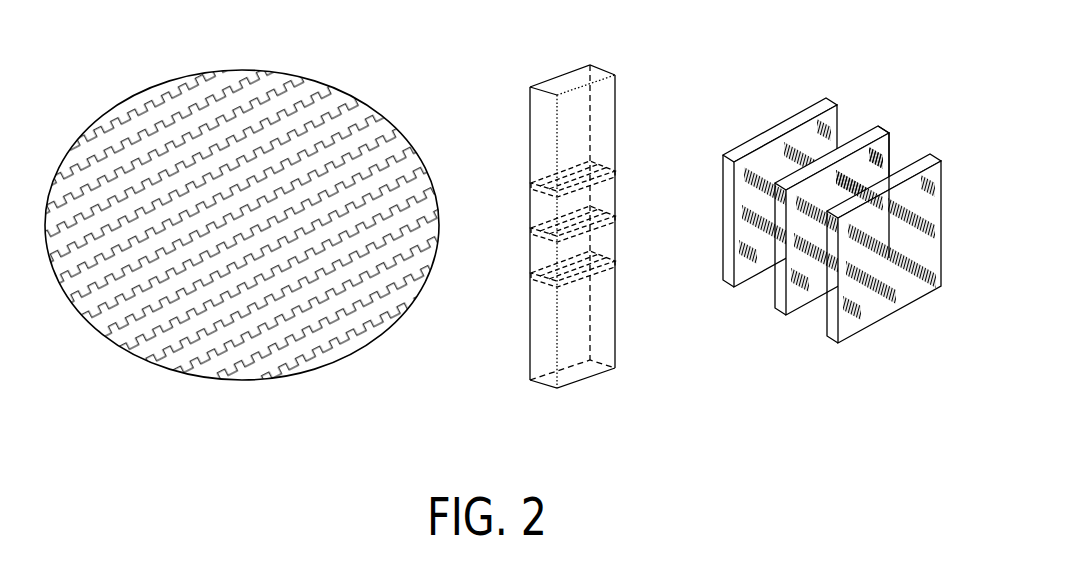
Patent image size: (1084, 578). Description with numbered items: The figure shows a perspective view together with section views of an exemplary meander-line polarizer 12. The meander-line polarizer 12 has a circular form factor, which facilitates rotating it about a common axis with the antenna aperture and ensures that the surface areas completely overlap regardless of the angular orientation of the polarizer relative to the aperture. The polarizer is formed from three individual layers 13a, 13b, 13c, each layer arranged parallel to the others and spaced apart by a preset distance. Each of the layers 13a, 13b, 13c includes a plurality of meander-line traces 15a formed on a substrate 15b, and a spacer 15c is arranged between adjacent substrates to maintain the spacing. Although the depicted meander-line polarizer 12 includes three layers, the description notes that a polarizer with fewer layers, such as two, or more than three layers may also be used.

The meander-line polarizer 12 is at (111, 91).
The first layer 13a is at (549, 287).
The second layer 13b is at (538, 231).
The third layer 13c is at (604, 178).
The meander-line traces 15a is at (884, 164).
The substrate 15b is at (885, 132).
The spacer 15c is at (856, 135).